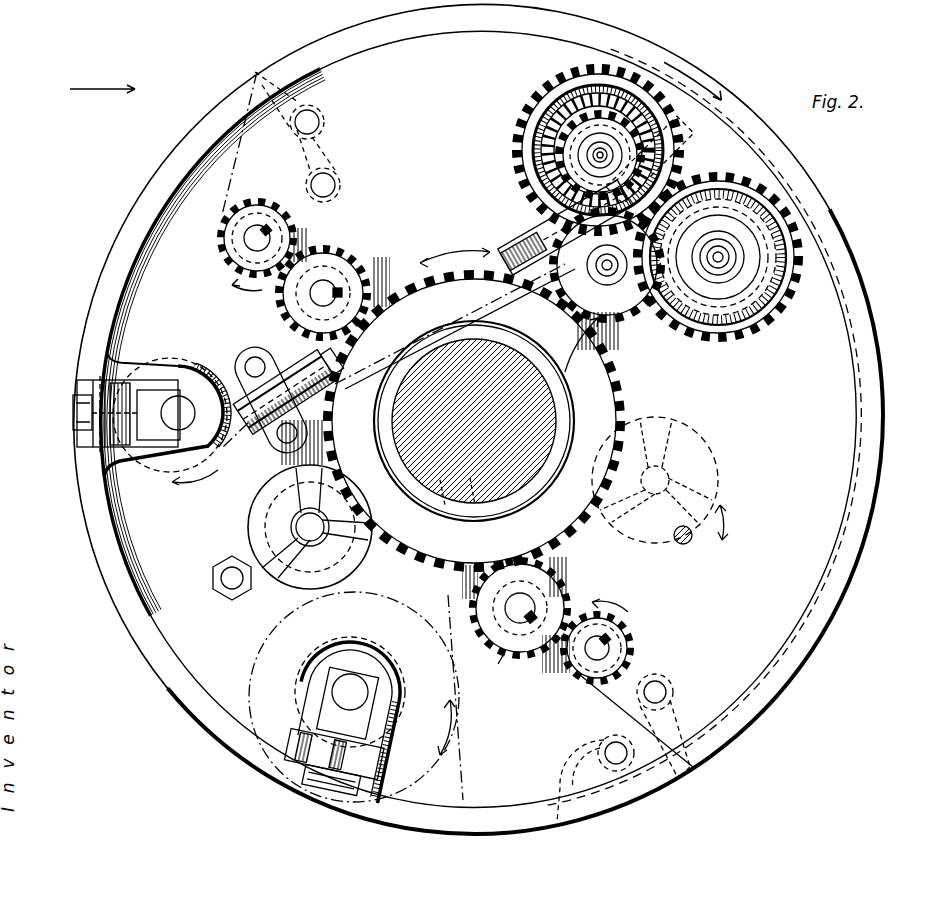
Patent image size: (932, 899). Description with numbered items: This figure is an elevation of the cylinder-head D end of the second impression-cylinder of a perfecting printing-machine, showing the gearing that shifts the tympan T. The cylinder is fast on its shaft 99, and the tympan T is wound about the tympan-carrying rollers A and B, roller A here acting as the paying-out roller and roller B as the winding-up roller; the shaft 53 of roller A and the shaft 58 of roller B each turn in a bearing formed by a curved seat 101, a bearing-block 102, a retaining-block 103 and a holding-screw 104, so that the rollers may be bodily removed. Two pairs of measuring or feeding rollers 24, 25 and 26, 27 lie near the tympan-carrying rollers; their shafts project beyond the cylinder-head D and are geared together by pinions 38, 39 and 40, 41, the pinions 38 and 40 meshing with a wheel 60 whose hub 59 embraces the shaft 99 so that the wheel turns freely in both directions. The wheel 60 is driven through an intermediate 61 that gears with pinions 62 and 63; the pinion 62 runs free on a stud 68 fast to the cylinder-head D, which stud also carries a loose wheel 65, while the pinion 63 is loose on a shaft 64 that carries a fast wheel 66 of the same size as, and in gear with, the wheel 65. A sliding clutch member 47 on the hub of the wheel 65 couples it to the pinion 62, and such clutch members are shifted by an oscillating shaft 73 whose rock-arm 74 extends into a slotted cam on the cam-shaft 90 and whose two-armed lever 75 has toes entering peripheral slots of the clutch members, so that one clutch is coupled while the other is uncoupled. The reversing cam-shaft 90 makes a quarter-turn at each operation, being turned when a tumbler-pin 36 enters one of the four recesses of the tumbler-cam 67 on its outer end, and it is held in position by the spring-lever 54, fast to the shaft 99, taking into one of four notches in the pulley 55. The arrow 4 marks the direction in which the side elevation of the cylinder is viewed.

The arrow 4 is at (102, 79).
The measuring or feeding roller 24 is at (520, 600).
The measuring or feeding roller 25 is at (597, 640).
The measuring or feeding roller 26 is at (324, 284).
The measuring or feeding roller 27 is at (248, 238).
The tumbler-pin 36 is at (692, 538).
The pinion 38 is at (506, 652).
The pinion 39 is at (650, 678).
The pinion 40 is at (343, 252).
The pinion 41 is at (262, 203).
The sliding clutch member 47 is at (545, 125).
The shaft of tympan-carrying roller A 53 is at (350, 692).
The spring-lever 54 is at (325, 425).
The pulley 55 is at (258, 540).
The shaft of tympan-carrying roller B 58 is at (178, 413).
The hub 59 is at (570, 418).
The wheel 60 is at (617, 403).
The intermediate 61 is at (628, 305).
The pinion 62 is at (535, 155).
The pinion 63 is at (760, 308).
The shaft 64 is at (718, 252).
The wheel 65 is at (560, 88).
The wheel 66 is at (668, 322).
The tumbler-cam 67 is at (248, 528).
The stud 68 is at (601, 155).
The oscillating shaft 73 is at (535, 256).
The rock-arm 74 is at (418, 500).
The two-armed lever 75 is at (655, 165).
The cam-shaft 90 is at (310, 527).
The shaft 99 is at (500, 350).
The curved seat 101 is at (253, 523).
The bearing-block 102 is at (226, 551).
The retaining-block 103 is at (185, 568).
The holding-screw 104 is at (74, 410).
The tympan-carrying roller A is at (385, 655).
The tympan-carrying roller B is at (190, 366).
The cylinder-head D is at (836, 560).
The tympan T is at (235, 170).